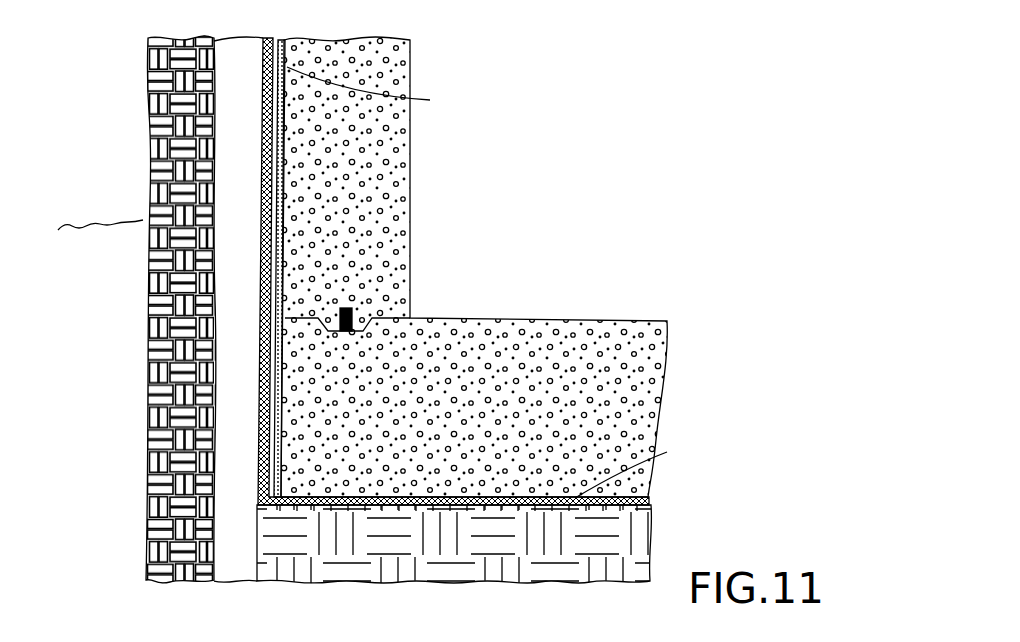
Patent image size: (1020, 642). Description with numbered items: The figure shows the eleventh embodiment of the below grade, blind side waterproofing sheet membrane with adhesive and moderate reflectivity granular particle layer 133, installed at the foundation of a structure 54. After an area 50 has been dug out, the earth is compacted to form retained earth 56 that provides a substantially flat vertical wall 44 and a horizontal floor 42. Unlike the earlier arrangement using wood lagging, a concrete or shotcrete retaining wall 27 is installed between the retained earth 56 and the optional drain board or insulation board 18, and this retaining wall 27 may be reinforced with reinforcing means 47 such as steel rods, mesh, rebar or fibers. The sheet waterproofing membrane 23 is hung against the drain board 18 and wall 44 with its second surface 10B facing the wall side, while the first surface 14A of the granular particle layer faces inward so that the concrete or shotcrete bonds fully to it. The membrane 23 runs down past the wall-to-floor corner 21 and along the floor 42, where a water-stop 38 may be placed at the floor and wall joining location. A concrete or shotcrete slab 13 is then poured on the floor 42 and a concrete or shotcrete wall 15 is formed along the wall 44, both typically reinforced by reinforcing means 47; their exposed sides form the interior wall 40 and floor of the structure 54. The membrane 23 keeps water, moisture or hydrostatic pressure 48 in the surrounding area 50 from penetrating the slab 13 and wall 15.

The second surface 10B is at (263, 202).
The concrete or shotcrete slab 13 is at (632, 362).
The first surface 14A is at (283, 163).
The concrete or shotcrete wall 15 is at (397, 60).
The drain board 18 is at (267, 120).
The wall-to-floor corner 21 is at (325, 468).
The sheet waterproofing membrane 23 is at (430, 100).
The concrete or shotcrete retaining wall 27 is at (222, 138).
The water-stop 38 is at (353, 310).
The interior wall 40 is at (407, 170).
The floor 42 is at (633, 332).
The wall 44 is at (392, 250).
The reinforcing means 47 is at (227, 70).
The water 48 is at (80, 228).
The area 50 is at (148, 606).
The structure 54 is at (383, 45).
The retained earth 56 is at (175, 97).
The waterproofing sheet membrane with adhesive and moderate reflectivity granular pa 133 is at (756, 153).